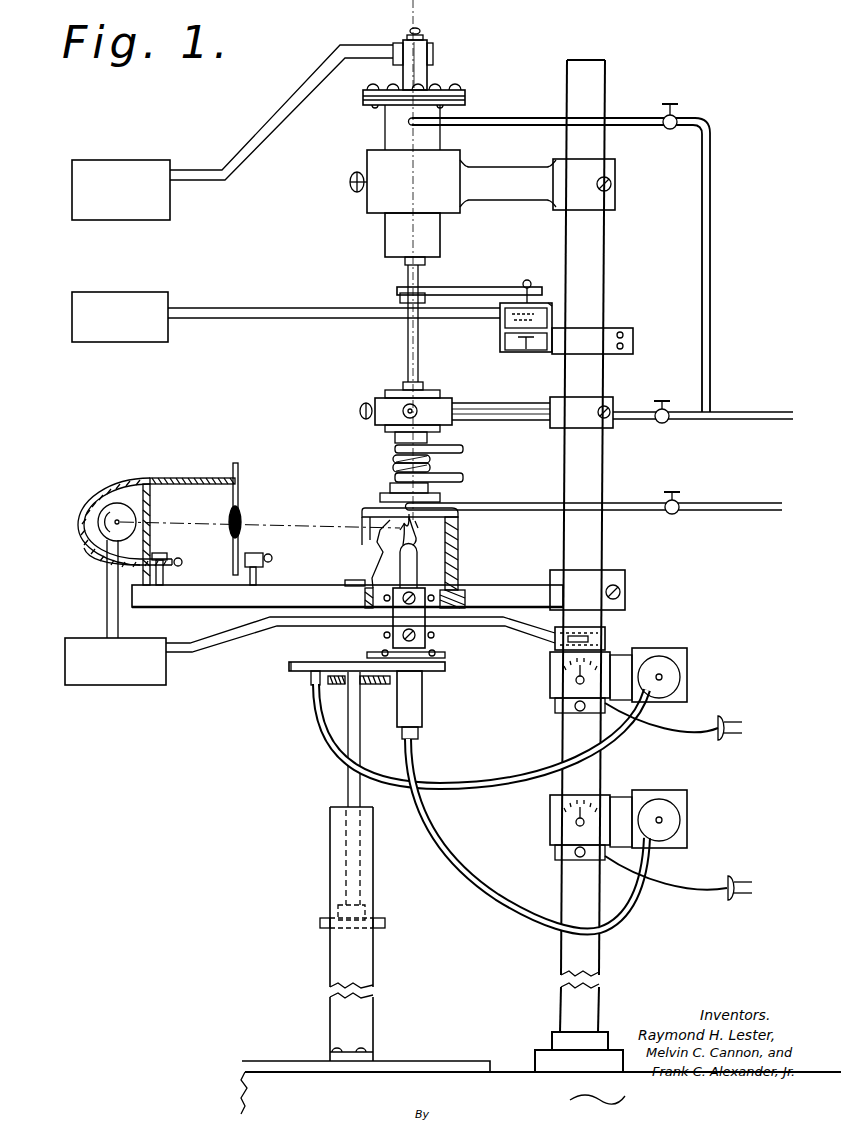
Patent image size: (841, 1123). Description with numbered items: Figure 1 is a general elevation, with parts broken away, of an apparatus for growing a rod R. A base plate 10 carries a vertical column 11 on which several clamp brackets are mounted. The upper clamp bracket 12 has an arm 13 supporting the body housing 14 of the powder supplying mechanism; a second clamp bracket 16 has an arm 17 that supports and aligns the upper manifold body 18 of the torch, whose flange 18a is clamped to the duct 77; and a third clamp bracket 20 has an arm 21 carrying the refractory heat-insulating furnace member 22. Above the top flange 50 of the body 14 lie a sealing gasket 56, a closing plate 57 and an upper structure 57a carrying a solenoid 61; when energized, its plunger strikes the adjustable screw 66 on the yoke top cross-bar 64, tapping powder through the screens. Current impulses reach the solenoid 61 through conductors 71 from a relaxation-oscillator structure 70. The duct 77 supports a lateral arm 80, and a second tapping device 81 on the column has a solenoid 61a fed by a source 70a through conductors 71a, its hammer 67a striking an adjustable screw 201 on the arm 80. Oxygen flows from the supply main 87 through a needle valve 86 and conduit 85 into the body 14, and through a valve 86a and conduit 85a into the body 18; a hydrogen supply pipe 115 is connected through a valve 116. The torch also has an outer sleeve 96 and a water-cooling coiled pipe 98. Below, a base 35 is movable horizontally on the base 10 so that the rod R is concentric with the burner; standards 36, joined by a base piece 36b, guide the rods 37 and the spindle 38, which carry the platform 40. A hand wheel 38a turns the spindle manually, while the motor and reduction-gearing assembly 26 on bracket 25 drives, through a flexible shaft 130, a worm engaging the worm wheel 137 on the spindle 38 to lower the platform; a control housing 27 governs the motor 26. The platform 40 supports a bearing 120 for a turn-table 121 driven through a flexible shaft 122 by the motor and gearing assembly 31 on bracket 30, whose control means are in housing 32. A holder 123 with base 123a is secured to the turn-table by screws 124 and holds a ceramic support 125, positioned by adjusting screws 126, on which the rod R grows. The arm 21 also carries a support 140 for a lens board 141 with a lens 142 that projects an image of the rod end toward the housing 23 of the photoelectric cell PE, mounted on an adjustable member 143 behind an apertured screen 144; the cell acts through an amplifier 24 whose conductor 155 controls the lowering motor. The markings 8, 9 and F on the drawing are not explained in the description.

The rod direction arrow 8 is at (428, 18).
The direction indicator 9 is at (405, 389).
The base structure or plate 10 is at (277, 1071).
The vertical column 11 is at (603, 88).
The upper clamp bracket 12 is at (617, 172).
The arm 13 is at (372, 200).
The body housing 14 is at (441, 233).
The second clamp bracket 16 is at (610, 398).
The arm 17 is at (393, 425).
The upper manifold body 18 is at (432, 401).
The secured flange 18a is at (440, 393).
The third clamp bracket 20 is at (626, 583).
The arm 21 is at (347, 596).
The refractory heat-insulating furnace member 22 is at (459, 548).
The housing 23 is at (80, 537).
The amplifying apparatus 24 is at (113, 685).
The clamp bracket 25 is at (555, 710).
The motor and reduction-gearing assembly 26 is at (688, 677).
The control housing 27 is at (606, 637).
The clamp bracket 30 is at (556, 852).
The motor and gearing assembly 31 is at (688, 820).
The housing 32 is at (608, 795).
The base 35 is at (420, 1064).
The standards 36 is at (333, 950).
The base piece 36b is at (348, 1050).
The guide rods 37 is at (347, 773).
The spindle 38 is at (350, 865).
The hand wheel 38a is at (322, 924).
The platform 40 is at (292, 666).
The top flange 50 is at (382, 107).
The sealing gasket 56 is at (368, 102).
The closing plate 57 is at (372, 96).
The upper structure 57a is at (428, 72).
The solenoid 61 is at (398, 44).
The solenoid 61a is at (552, 306).
The top cross-bar 64 is at (430, 43).
The adjustable screw 66 is at (422, 31).
The plunger or hammer 67a is at (503, 341).
The relaxation oscillator structure 70 is at (170, 202).
The source 70a is at (170, 292).
The conductors 71 is at (262, 132).
The conductors 71a is at (283, 302).
The duct 77 is at (407, 336).
The lateral arm 80 is at (462, 290).
The second tapping device 81 is at (530, 353).
The conduit 85 is at (532, 110).
The conduit 85a is at (525, 421).
The regulating needle valve 86 is at (676, 115).
The regulating valve 86a is at (662, 424).
The oxygen supply main 87 is at (752, 412).
The outer sleeve 96 is at (395, 462).
The coiled pipe 98 is at (395, 480).
The hydrogen supply pipe 115 is at (748, 496).
The valve 116 is at (672, 515).
The bearing 120 is at (420, 715).
The turn-table 121 is at (372, 663).
The flexible shaft 122 is at (462, 882).
The holder 123 is at (415, 620).
The base 123a is at (384, 654).
The screws 124 is at (432, 652).
The ceramic support 125 is at (418, 566).
The adjusting screws 126 is at (370, 592).
The flexible shaft 130 is at (470, 783).
The worm wheel 137 is at (380, 685).
The support 140 is at (262, 562).
The lens board 141 is at (240, 490).
The lens 142 is at (242, 520).
The adjustable member 143 is at (163, 560).
The apertured screen 144 is at (180, 466).
The conductor 155 is at (230, 634).
The adjustable screw 201 is at (528, 280).
The photoelectric cell PE is at (104, 505).
The furnace F is at (440, 516).
The rod R is at (420, 522).